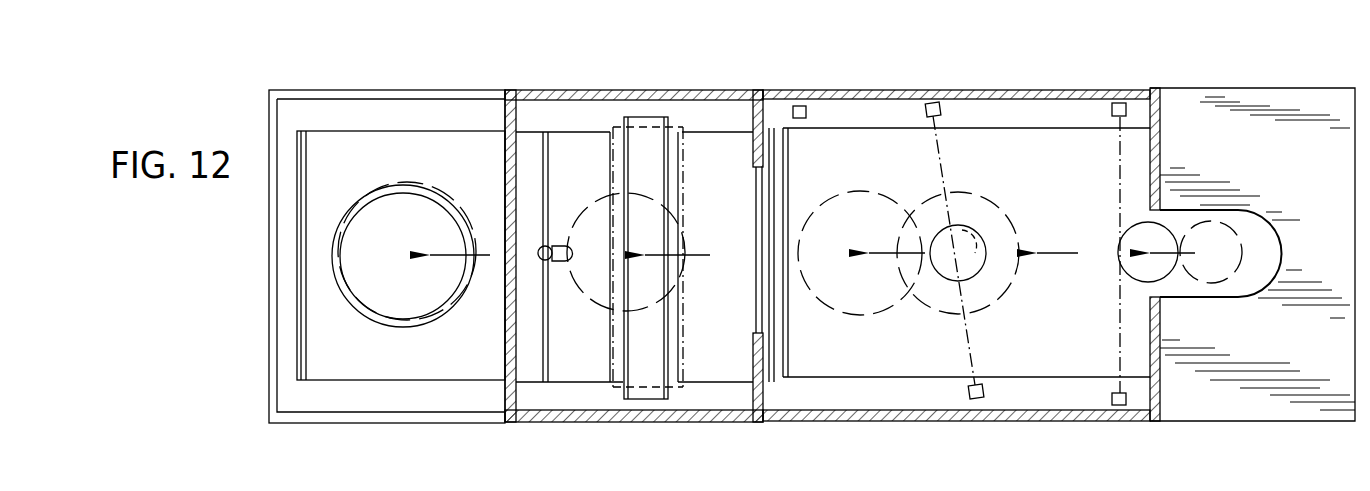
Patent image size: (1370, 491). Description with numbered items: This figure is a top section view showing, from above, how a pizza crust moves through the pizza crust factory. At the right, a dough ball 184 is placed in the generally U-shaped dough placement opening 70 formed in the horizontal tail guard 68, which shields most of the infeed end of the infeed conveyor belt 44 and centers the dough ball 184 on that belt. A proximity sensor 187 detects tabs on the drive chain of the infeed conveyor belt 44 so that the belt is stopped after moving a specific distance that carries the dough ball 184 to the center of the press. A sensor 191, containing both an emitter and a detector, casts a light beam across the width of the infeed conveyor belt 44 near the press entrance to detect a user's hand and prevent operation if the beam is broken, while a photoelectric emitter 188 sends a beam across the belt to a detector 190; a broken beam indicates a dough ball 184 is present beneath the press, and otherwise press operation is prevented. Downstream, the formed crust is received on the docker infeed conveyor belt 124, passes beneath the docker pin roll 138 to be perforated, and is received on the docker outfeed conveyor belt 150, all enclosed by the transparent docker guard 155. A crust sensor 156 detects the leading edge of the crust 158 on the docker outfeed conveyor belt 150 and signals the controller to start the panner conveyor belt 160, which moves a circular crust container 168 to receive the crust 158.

The infeed conveyor belt 44 is at (1062, 362).
The horizontal tail guard 68 is at (1259, 102).
The dough placement opening 70 is at (1284, 246).
The docker infeed conveyor belt 124 is at (727, 157).
The docker pin roll 138 is at (640, 397).
The docker outfeed conveyor belt 150 is at (595, 142).
The docker guard 155 is at (558, 90).
The crust sensor 156 is at (550, 245).
The crust 158 is at (442, 285).
The panner conveyor belt 160 is at (377, 150).
The crust container 168 is at (400, 181).
The dough ball 184 is at (988, 200).
The proximity sensor 187 is at (799, 106).
The photoelectric emitter 188 is at (934, 103).
The detector 190 is at (972, 393).
The sensor 191 is at (1127, 105).